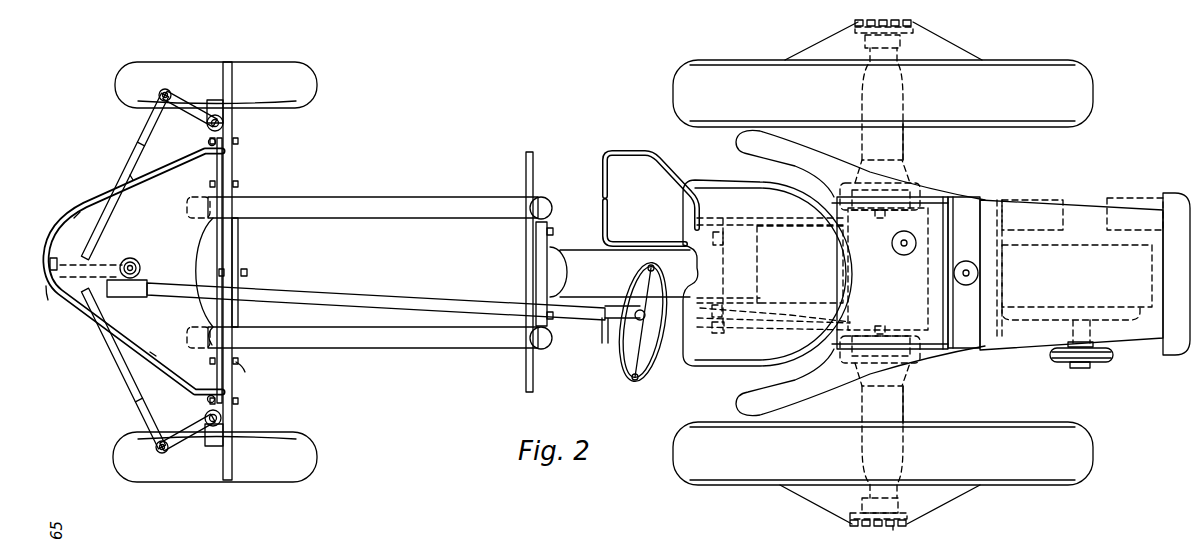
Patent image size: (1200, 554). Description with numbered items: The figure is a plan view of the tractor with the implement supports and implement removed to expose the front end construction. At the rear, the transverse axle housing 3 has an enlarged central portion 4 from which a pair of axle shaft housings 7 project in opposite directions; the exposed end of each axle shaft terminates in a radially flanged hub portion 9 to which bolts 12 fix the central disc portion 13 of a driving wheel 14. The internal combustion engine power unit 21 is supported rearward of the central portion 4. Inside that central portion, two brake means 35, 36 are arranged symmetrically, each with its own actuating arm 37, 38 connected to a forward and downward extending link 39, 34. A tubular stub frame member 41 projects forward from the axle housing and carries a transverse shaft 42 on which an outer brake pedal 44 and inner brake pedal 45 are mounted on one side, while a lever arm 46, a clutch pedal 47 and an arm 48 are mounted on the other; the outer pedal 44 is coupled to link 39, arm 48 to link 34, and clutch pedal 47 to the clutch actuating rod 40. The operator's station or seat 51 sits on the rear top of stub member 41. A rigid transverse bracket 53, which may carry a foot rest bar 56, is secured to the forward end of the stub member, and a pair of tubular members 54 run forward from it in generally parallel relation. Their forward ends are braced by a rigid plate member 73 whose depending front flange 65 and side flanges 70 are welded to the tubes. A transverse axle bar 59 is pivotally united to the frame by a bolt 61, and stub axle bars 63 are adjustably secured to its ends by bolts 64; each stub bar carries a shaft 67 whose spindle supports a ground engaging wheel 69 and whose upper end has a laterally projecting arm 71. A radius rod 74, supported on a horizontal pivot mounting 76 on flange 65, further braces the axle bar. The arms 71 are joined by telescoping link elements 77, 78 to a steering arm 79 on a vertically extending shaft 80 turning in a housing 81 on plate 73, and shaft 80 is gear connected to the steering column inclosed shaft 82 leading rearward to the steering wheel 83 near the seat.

The transverse axle housing 3 is at (898, 285).
The enlarged central portion 4 is at (852, 177).
The axle shaft housing 7 is at (900, 142).
The radially flanged hub portion 9 is at (898, 514).
The bolts 12 is at (894, 537).
The central disc portion 13 is at (955, 42).
The driving wheel 14 is at (1030, 101).
The internal combustion engine power unit 21 is at (1090, 246).
The brake actuating link 34 is at (765, 331).
The brake means 35 is at (883, 184).
The brake means 36 is at (880, 366).
The brake actuating arm 37 is at (882, 220).
The brake actuating arm 38 is at (886, 330).
The brake actuating link 39 is at (790, 209).
The clutch actuating rod 40 is at (780, 316).
The tubular stub frame member 41 is at (591, 262).
The shaft 42 is at (718, 262).
The outer brake pedal 44 is at (601, 179).
The inner brake pedal 45 is at (601, 231).
The lever arm 46 is at (710, 316).
The clutch pedal 47 is at (603, 345).
The arm 48 is at (710, 330).
The operator's station or seat 51 is at (726, 179).
The rigid transverse bracket 53 is at (549, 225).
The tubular members 54 is at (399, 198).
The foot rest bar 56 is at (524, 368).
The transverse axle bar 59 is at (240, 165).
The bolt 61 is at (247, 270).
The stub axle bars 63 is at (215, 168).
The bolts 64 is at (245, 372).
The front flange 65 is at (48, 300).
The shaft 67 is at (207, 132).
The ground engaging wheel 69 is at (302, 63).
The side flanges 70 is at (145, 340).
The laterally projecting arm 71 is at (183, 116).
The rigid plate member 73 is at (157, 203).
The radius rod 74 is at (86, 205).
The horizontal pivot mounting 76 is at (65, 265).
The telescoping link element 77 is at (125, 170).
The telescoping link element 78 is at (148, 124).
The steering arm 79 is at (110, 258).
The vertically extending shaft 80 is at (138, 262).
The housing 81 is at (147, 282).
The steering column inclosed shaft 82 is at (366, 297).
The steering wheel 83 is at (640, 380).